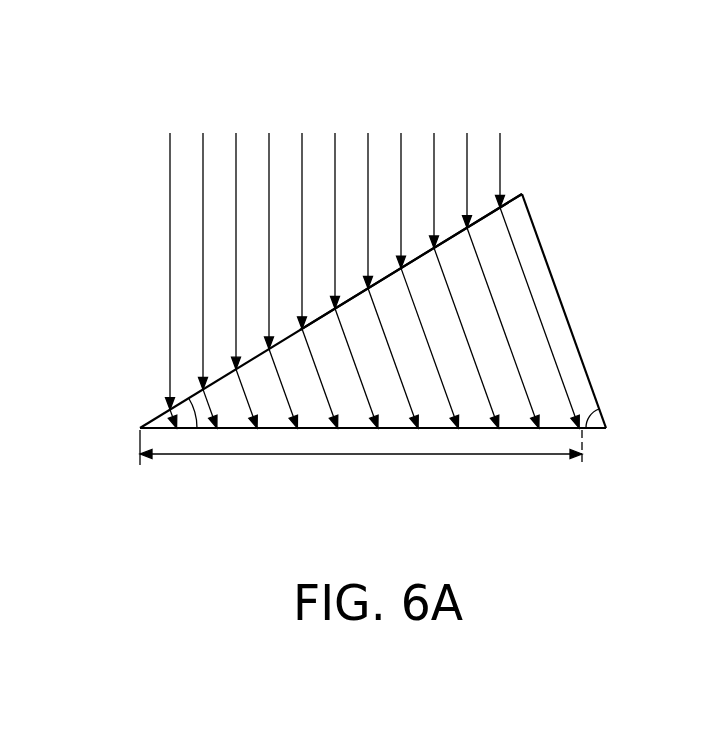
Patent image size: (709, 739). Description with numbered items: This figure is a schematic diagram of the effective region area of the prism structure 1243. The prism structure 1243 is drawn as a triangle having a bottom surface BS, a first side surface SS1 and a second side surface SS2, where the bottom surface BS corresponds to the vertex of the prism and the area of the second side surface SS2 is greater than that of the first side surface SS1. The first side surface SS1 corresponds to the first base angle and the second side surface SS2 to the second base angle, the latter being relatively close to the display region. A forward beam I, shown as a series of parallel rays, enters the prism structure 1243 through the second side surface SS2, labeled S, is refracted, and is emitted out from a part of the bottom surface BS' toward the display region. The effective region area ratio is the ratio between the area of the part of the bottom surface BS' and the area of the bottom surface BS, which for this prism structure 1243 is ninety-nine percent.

The forward beam I is at (170, 186).
The light incident surface S is at (522, 194).
The prism structure 1243 is at (372, 313).
The first side surface SS1 is at (577, 340).
The second side surface SS2 is at (178, 405).
The bottom surface BS is at (403, 457).
The part of the bottom surface BS' is at (361, 461).